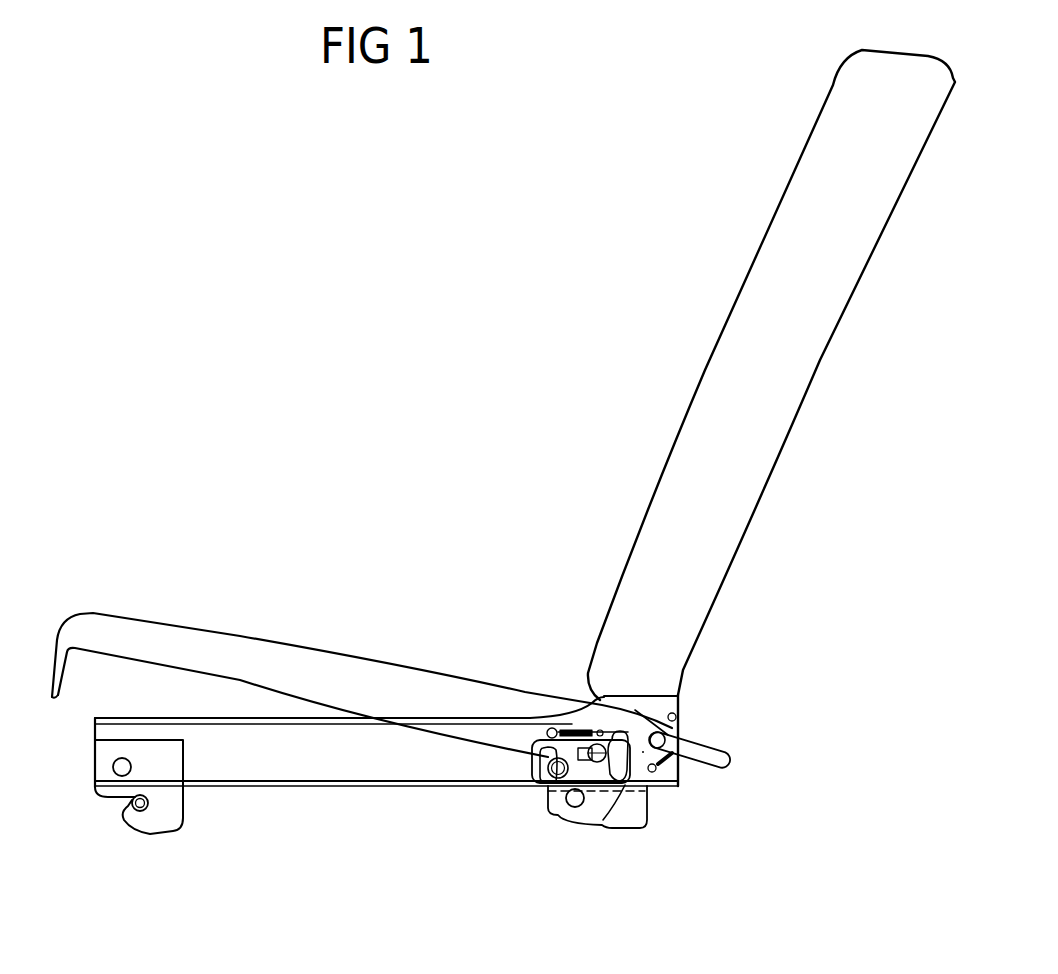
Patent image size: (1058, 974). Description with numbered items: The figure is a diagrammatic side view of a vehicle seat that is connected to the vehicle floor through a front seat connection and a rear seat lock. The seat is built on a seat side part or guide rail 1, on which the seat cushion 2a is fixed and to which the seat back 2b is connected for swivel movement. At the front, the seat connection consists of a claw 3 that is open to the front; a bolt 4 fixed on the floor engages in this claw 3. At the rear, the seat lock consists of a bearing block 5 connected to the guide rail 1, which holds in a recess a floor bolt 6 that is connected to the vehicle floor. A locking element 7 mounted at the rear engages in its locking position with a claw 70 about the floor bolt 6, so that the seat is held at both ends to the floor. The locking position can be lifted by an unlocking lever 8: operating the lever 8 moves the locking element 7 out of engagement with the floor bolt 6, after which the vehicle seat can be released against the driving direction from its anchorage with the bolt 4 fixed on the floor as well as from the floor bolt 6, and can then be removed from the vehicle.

The guide rail 1 is at (330, 770).
The seat cushion 2a is at (193, 643).
The seat back 2b is at (768, 282).
The claw 3 is at (162, 818).
The bolt 4 is at (138, 811).
The bearing block 5 is at (632, 810).
The floor bolt 6 is at (573, 807).
The locking element 7 is at (560, 745).
The unlocking lever 8 is at (697, 752).
The claw 70 is at (586, 815).